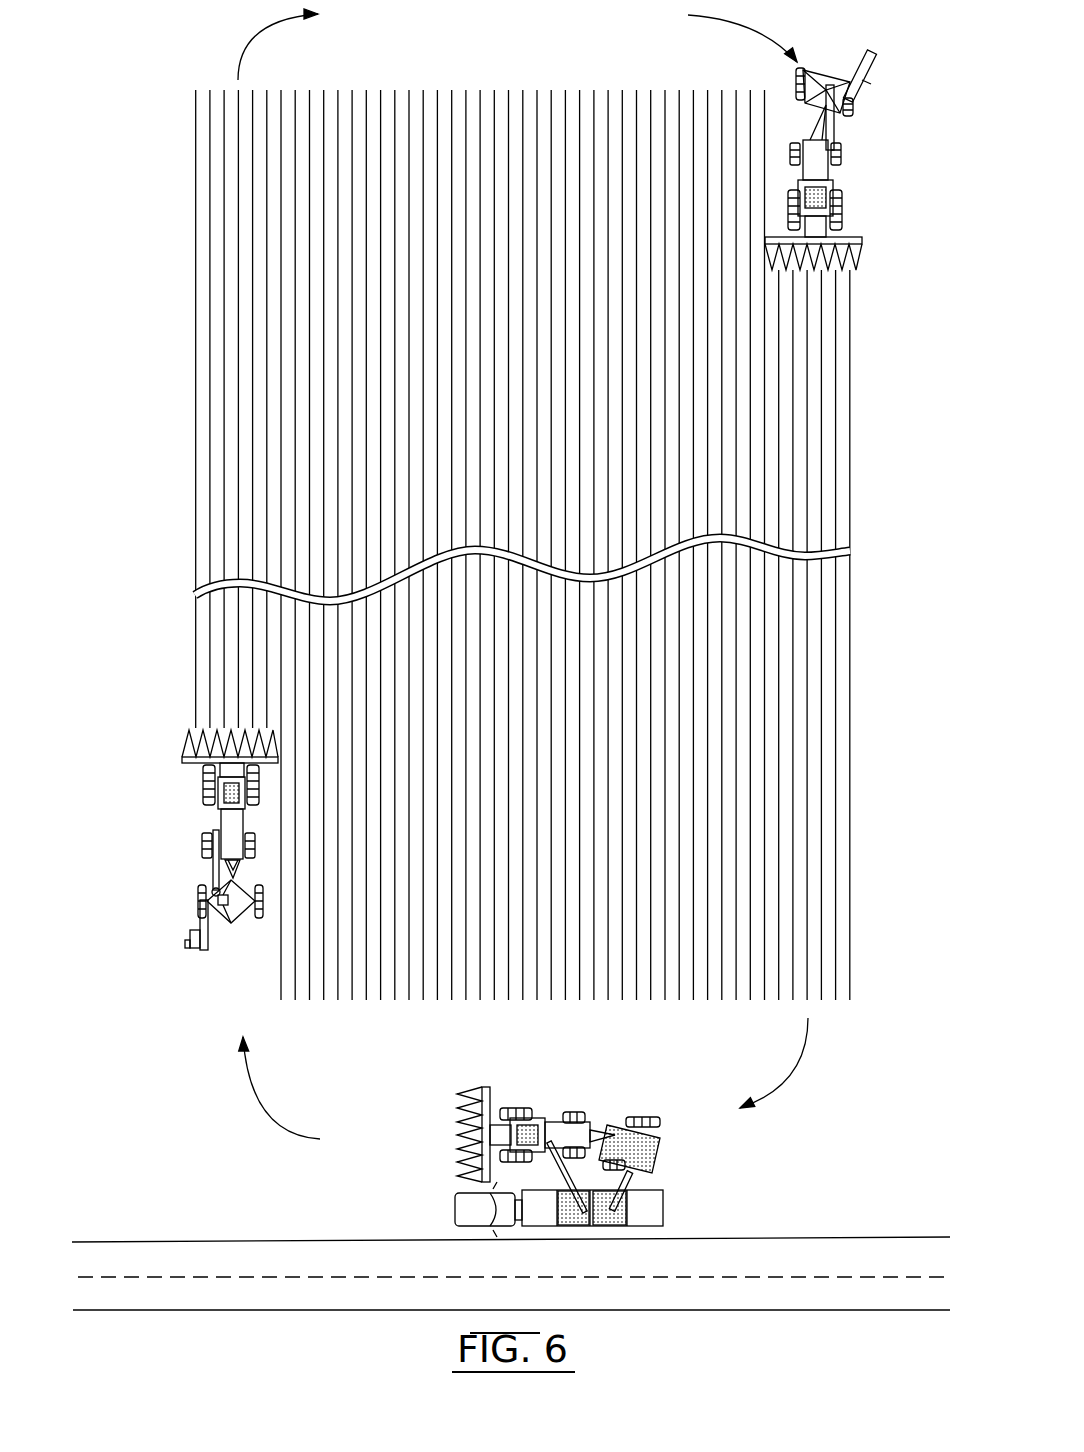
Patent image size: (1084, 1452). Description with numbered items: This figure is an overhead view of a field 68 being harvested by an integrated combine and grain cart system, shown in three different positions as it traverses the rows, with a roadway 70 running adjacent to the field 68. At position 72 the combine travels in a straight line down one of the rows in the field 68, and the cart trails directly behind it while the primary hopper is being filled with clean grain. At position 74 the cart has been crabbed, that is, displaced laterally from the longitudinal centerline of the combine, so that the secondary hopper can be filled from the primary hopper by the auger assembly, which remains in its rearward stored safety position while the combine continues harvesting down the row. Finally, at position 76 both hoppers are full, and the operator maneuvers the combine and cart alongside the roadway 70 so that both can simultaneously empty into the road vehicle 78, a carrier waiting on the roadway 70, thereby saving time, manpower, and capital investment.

The field 68 is at (860, 475).
The roadway 70 is at (810, 1238).
The position 72 is at (198, 868).
The position 74 is at (848, 168).
The position 76 is at (610, 1112).
The road vehicle 78 is at (680, 1198).